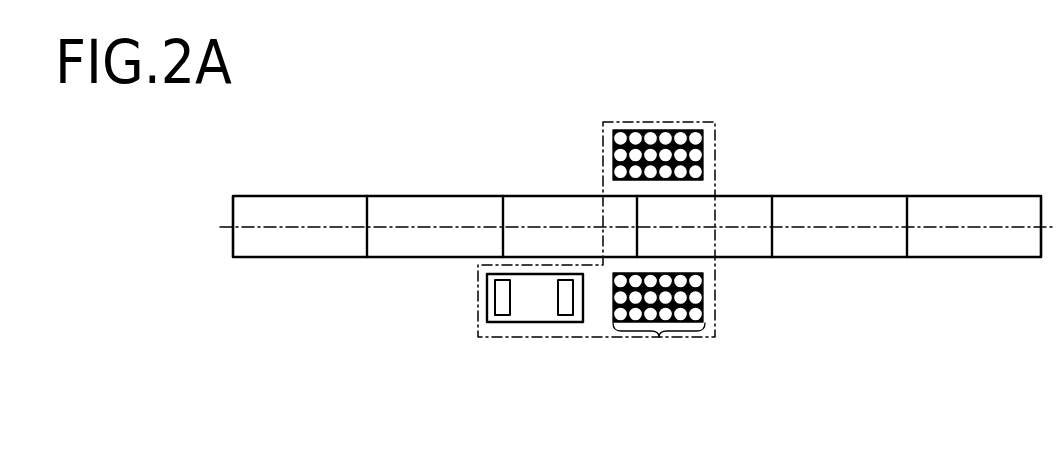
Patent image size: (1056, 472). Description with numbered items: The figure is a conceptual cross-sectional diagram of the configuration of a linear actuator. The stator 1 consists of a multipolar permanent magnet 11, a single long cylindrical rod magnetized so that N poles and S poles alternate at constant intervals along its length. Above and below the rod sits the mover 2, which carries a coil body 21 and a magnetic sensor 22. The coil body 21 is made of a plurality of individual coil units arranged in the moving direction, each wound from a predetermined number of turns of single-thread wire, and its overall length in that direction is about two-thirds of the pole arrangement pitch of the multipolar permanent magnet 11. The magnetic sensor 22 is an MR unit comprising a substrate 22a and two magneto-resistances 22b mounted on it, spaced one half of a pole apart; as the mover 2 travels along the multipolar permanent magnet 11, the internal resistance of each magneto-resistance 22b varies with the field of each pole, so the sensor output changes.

The stator 1 is at (965, 190).
The multipolar permanent magnet 11 is at (836, 195).
The mover 2 is at (670, 118).
The coil body 21 is at (703, 309).
The magnetic sensor 22 is at (487, 292).
The substrate 22a is at (503, 313).
The magneto-resistances 22b is at (565, 313).